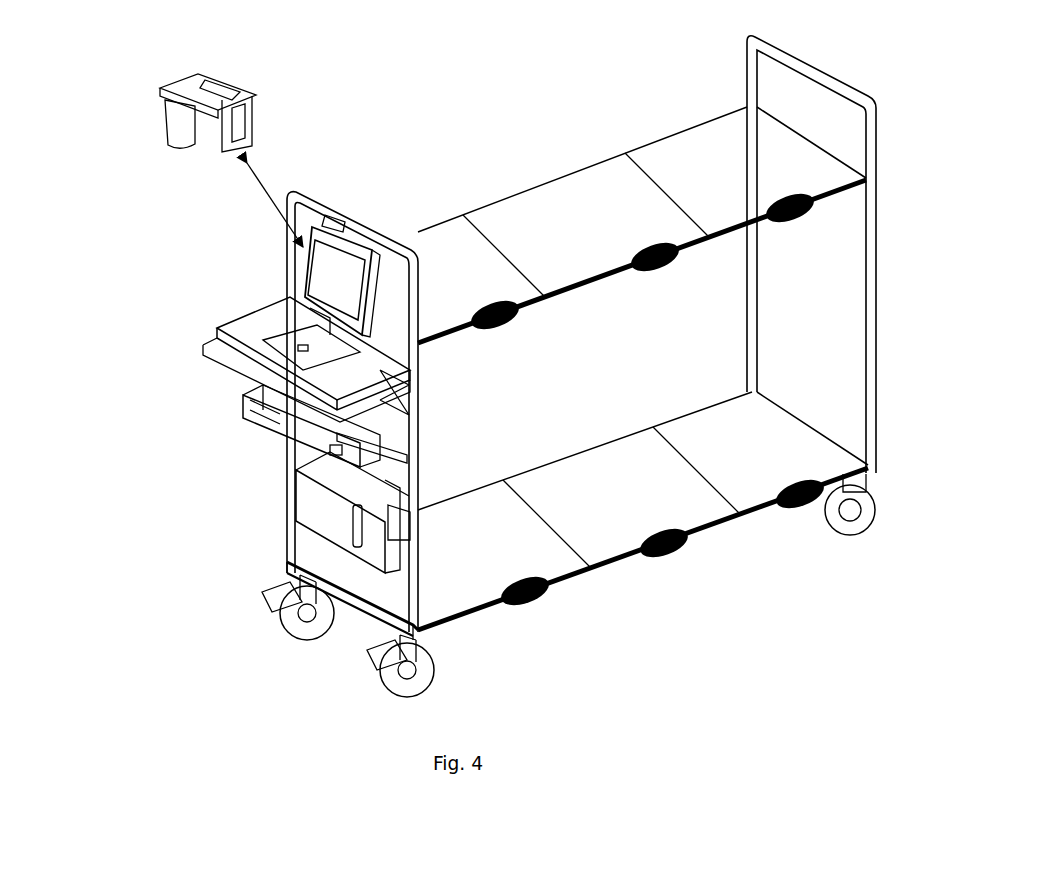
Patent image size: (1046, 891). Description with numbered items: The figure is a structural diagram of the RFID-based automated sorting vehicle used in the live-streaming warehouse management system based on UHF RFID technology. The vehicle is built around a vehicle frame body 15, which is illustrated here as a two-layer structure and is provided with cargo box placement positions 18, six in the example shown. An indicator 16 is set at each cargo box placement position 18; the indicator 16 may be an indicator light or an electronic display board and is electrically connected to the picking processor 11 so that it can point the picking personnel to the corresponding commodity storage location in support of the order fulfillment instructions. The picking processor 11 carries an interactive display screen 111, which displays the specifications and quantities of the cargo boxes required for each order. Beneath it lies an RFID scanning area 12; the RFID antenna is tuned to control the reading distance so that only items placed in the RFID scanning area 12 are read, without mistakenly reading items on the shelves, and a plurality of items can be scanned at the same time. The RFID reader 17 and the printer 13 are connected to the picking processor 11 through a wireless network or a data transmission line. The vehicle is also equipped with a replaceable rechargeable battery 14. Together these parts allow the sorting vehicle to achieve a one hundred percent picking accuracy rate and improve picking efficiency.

The picking processor 11 is at (272, 208).
The interactive display screen 111 is at (345, 282).
The RFID scanning area 12 is at (270, 328).
The printer 13 is at (252, 403).
The replaceable rechargeable battery 14 is at (328, 495).
The vehicle frame body 15 is at (355, 603).
The indicator 16 is at (668, 562).
The RFID reader 17 is at (152, 97).
The cargo box placement position 18 is at (617, 523).